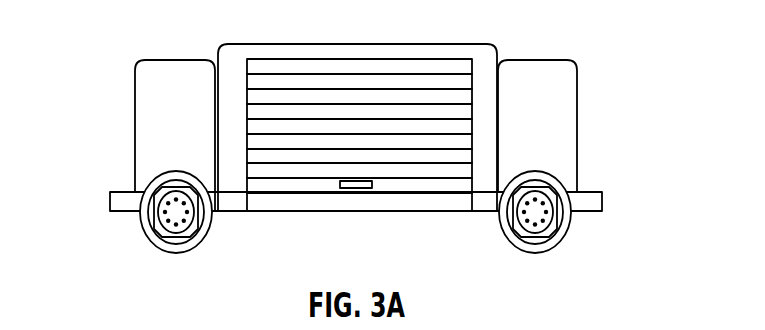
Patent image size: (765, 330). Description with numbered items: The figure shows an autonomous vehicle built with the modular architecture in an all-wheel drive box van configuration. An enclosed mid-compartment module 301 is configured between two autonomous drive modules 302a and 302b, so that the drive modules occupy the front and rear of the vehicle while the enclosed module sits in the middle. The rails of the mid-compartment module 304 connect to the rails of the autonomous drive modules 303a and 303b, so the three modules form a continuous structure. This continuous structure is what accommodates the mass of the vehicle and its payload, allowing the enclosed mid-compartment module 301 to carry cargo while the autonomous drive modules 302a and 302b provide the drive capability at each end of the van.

The enclosed mid-compartment module 301 is at (437, 70).
The autonomous drive module 302a is at (150, 130).
The autonomous drive module 302b is at (563, 108).
The rails of the autonomous drive module 303a is at (228, 211).
The rails of the autonomous drive module 303b is at (480, 211).
The rails of the mid-compartment module 304 is at (442, 211).